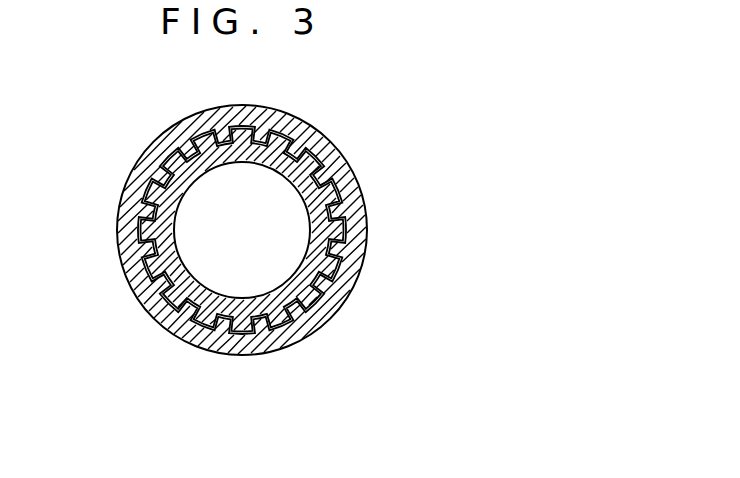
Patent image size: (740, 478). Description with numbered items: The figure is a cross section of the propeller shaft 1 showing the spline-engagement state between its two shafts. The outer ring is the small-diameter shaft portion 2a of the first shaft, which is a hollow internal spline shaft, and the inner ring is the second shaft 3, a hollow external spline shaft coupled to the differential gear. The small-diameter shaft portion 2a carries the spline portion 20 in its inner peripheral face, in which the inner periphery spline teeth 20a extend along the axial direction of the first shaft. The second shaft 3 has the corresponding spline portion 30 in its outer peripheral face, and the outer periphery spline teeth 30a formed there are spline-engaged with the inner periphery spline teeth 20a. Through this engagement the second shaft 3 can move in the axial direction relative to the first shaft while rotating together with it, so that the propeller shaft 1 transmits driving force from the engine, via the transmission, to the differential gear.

The propeller shaft 1 is at (282, 254).
The small-diameter shaft portion 2a is at (372, 212).
The spline portion 20 is at (282, 230).
The inner periphery spline teeth 20a is at (342, 298).
The second shaft 3 is at (283, 267).
The spline portion 30 is at (264, 338).
The outer periphery spline teeth 30a is at (200, 327).